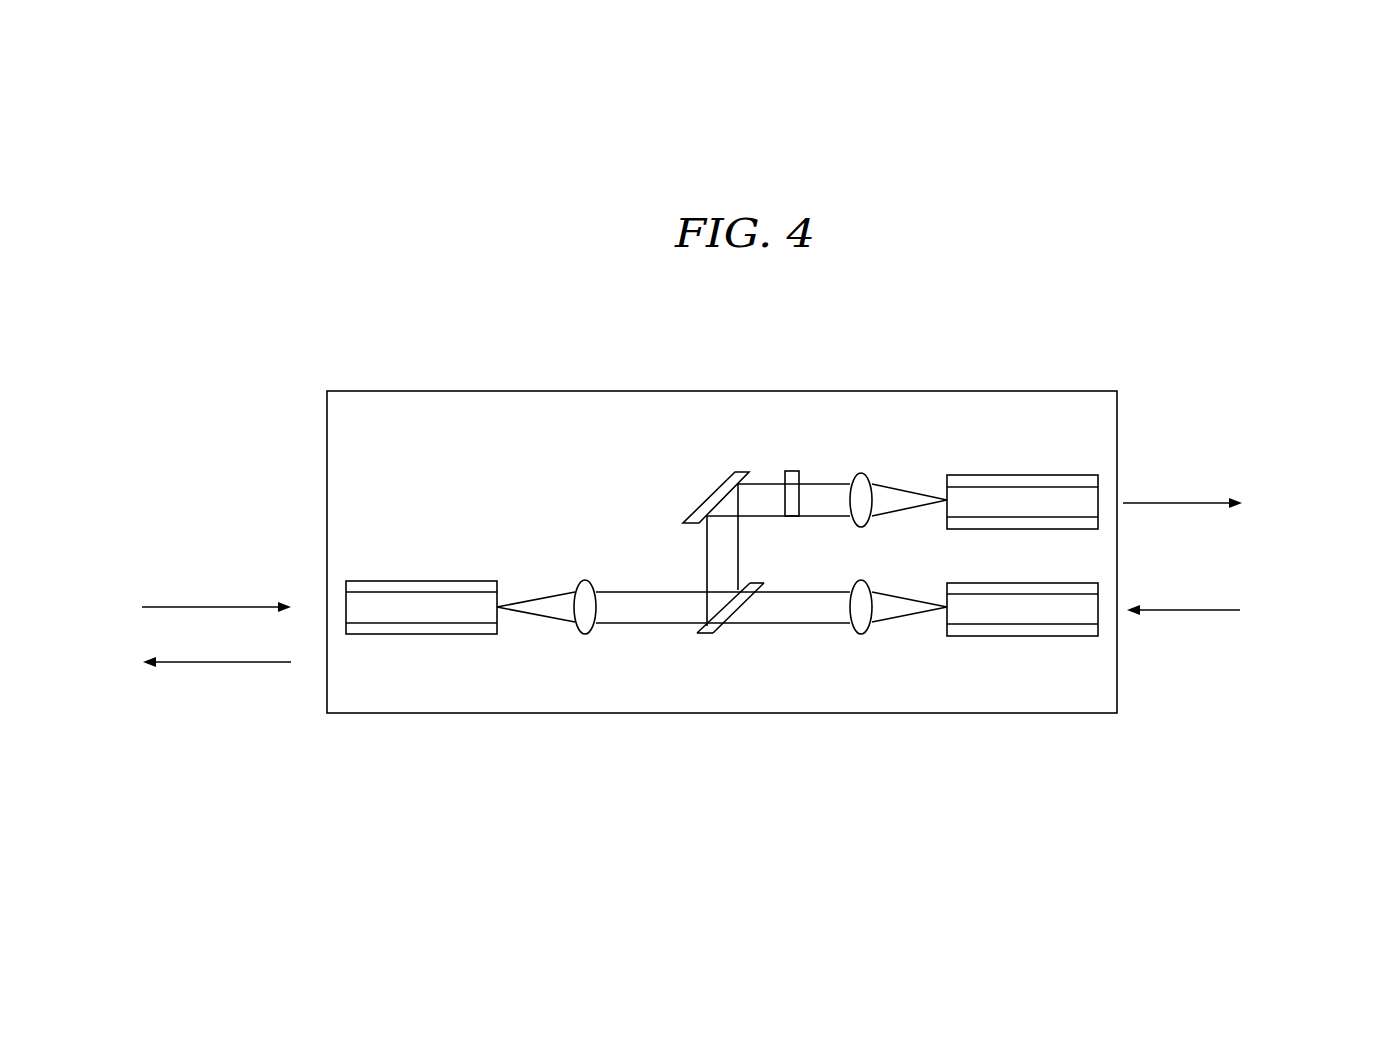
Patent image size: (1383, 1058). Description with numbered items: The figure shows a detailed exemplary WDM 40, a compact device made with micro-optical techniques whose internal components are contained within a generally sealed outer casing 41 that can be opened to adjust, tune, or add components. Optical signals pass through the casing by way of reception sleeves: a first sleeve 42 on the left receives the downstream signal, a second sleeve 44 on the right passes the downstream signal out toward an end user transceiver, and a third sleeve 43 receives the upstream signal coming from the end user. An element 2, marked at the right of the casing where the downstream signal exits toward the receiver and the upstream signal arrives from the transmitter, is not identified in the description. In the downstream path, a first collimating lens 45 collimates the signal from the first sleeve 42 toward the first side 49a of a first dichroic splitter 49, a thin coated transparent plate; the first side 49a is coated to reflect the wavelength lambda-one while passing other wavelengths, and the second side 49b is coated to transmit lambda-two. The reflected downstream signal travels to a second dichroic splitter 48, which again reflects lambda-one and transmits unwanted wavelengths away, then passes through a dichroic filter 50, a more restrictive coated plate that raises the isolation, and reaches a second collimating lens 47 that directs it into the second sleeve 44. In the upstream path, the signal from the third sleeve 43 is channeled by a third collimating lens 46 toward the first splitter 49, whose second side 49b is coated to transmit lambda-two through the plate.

The optical fiber interface 2 is at (744, 529).
The WDM 40 is at (477, 355).
The outer casing 41 is at (641, 383).
The first sleeve 42 is at (421, 581).
The third sleeve 43 is at (1022, 636).
The second sleeve 44 is at (1021, 475).
The first collimating lens 45 is at (585, 589).
The third collimating lens 46 is at (872, 593).
The second collimating lens 47 is at (872, 487).
The second dichroic splitter 48 is at (715, 494).
The first dichroic splitter 49 is at (704, 645).
The first side 49a is at (690, 625).
The second side 49b is at (730, 640).
The dichroic filter 50 is at (792, 460).